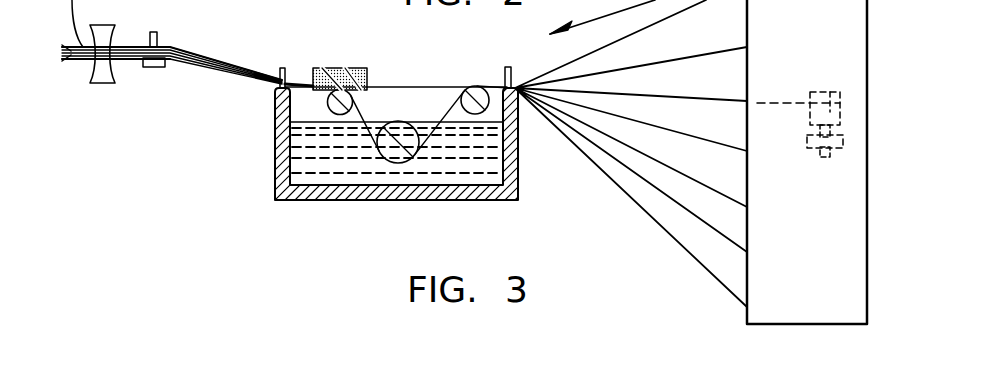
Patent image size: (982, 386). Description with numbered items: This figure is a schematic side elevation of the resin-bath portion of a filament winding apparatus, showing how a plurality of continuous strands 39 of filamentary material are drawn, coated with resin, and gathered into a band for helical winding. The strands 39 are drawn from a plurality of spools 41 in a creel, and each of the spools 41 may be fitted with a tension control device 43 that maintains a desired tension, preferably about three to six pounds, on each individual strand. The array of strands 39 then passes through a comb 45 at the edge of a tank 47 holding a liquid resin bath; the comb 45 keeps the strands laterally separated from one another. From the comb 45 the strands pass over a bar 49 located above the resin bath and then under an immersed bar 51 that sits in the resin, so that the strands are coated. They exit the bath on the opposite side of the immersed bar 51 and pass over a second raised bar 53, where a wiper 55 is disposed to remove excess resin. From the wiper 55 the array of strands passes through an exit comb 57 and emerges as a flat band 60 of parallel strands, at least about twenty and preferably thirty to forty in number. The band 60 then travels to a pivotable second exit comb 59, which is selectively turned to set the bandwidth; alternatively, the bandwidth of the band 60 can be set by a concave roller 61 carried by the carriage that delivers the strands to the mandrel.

The continuous strands 39 is at (628, 36).
The spools 41 is at (830, 90).
The tension control device 43 is at (833, 157).
The comb 45 is at (507, 67).
The tank 47 is at (447, 200).
The bar 49 is at (474, 98).
The immersed bar 51 is at (400, 130).
The second raised bar 53 is at (327, 93).
The wiper 55 is at (321, 68).
The exit comb 57 is at (280, 72).
The second exit comb 59 is at (148, 67).
The band 60 is at (197, 56).
The concave roller 61 is at (102, 75).